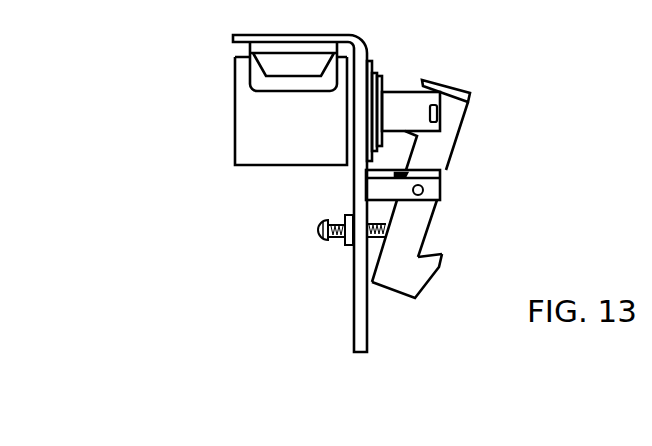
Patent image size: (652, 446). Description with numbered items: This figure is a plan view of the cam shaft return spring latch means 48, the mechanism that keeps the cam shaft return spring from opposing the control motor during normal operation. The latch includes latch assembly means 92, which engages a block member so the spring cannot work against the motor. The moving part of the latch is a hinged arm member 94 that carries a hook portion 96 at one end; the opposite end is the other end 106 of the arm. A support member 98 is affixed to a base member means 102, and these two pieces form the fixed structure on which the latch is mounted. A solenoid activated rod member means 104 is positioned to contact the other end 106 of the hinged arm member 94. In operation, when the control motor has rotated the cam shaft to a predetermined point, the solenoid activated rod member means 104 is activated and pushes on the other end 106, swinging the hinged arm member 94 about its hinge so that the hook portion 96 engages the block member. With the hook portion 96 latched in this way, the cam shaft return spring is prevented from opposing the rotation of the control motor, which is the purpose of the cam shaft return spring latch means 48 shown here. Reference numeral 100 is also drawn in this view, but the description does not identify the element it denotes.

The cam shaft return spring latch means 48 is at (503, 188).
The latch assembly means 92 is at (398, 95).
The hinged arm member 94 is at (455, 151).
The hook portion 96 is at (428, 282).
The support member 98 is at (373, 193).
The lever lower portion 100 is at (423, 217).
The base member means 102 is at (359, 298).
The solenoid activated rod member means 104 is at (477, 73).
The other end 106 is at (466, 108).